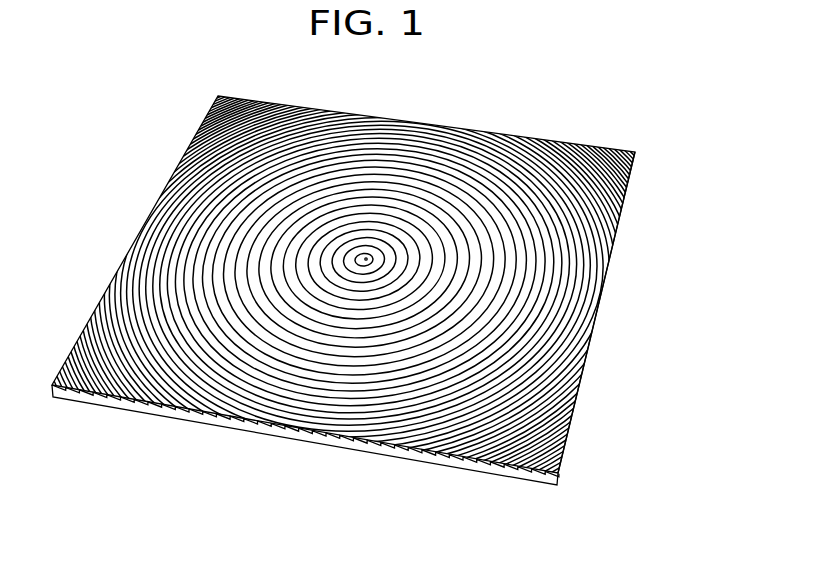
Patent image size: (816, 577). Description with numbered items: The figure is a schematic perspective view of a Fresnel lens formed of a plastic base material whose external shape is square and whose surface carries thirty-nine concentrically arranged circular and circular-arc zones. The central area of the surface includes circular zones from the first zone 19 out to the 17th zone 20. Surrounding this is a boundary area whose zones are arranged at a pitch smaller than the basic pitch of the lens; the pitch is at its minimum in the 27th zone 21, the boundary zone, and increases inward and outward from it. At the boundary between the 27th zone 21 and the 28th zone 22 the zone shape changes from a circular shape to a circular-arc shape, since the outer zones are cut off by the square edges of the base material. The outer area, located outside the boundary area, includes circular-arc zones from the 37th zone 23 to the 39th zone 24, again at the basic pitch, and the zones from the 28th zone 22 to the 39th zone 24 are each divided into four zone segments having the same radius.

The first zone 19 is at (366, 258).
The 17th zone 20 is at (517, 282).
The 27th zone 21 is at (578, 332).
The 28th zone 22 is at (575, 348).
The 37th zone 23 is at (565, 442).
The 39th zone 24 is at (560, 463).